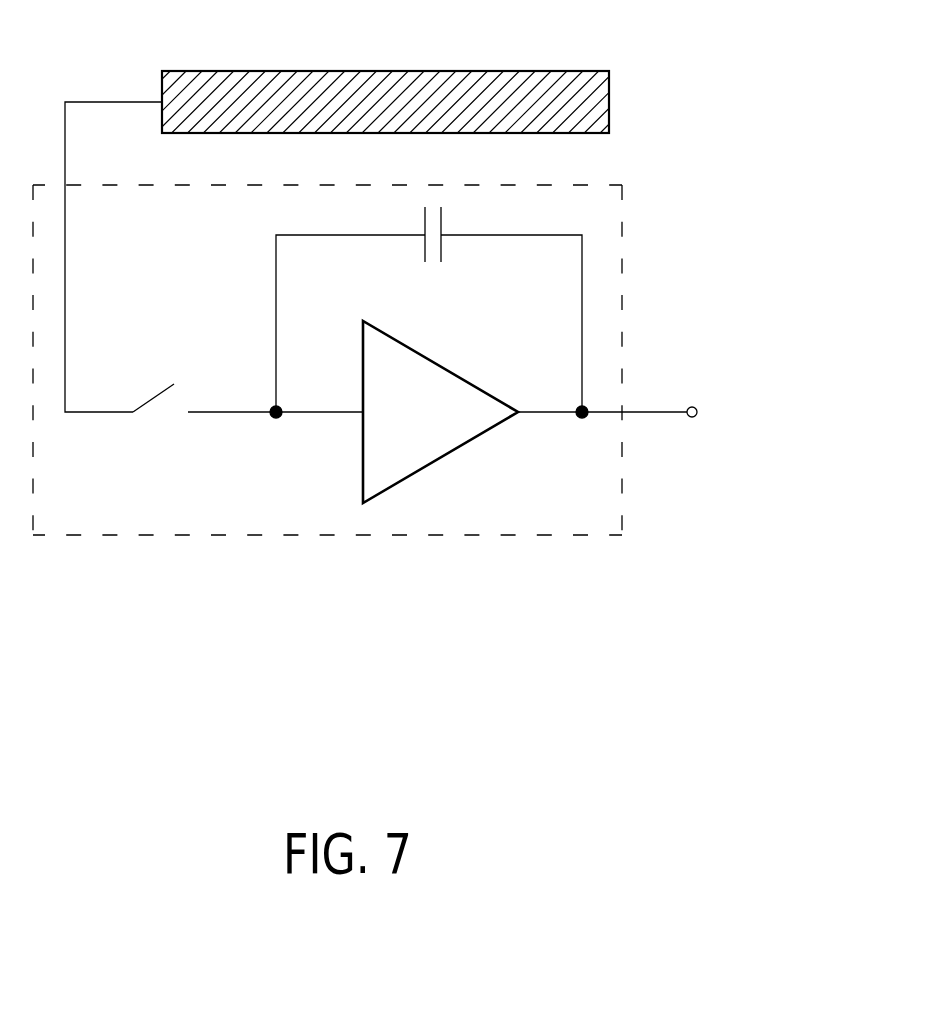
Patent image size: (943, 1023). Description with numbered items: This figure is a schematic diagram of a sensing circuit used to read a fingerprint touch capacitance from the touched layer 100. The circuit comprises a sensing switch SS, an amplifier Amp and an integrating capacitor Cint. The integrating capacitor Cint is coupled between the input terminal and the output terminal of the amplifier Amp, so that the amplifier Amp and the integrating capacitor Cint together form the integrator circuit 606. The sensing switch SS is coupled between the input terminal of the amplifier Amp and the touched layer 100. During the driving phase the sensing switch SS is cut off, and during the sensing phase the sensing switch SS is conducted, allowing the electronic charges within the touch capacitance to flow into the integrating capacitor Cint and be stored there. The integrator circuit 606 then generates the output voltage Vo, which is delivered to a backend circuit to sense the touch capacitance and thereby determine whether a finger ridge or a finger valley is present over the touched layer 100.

The touched layer 100 is at (558, 71).
The integrator circuit 606 is at (292, 535).
The sensing switch SS is at (156, 418).
The integrating capacitor Cint is at (436, 255).
The amplifier Amp is at (440, 412).
The output voltage Vo is at (717, 412).